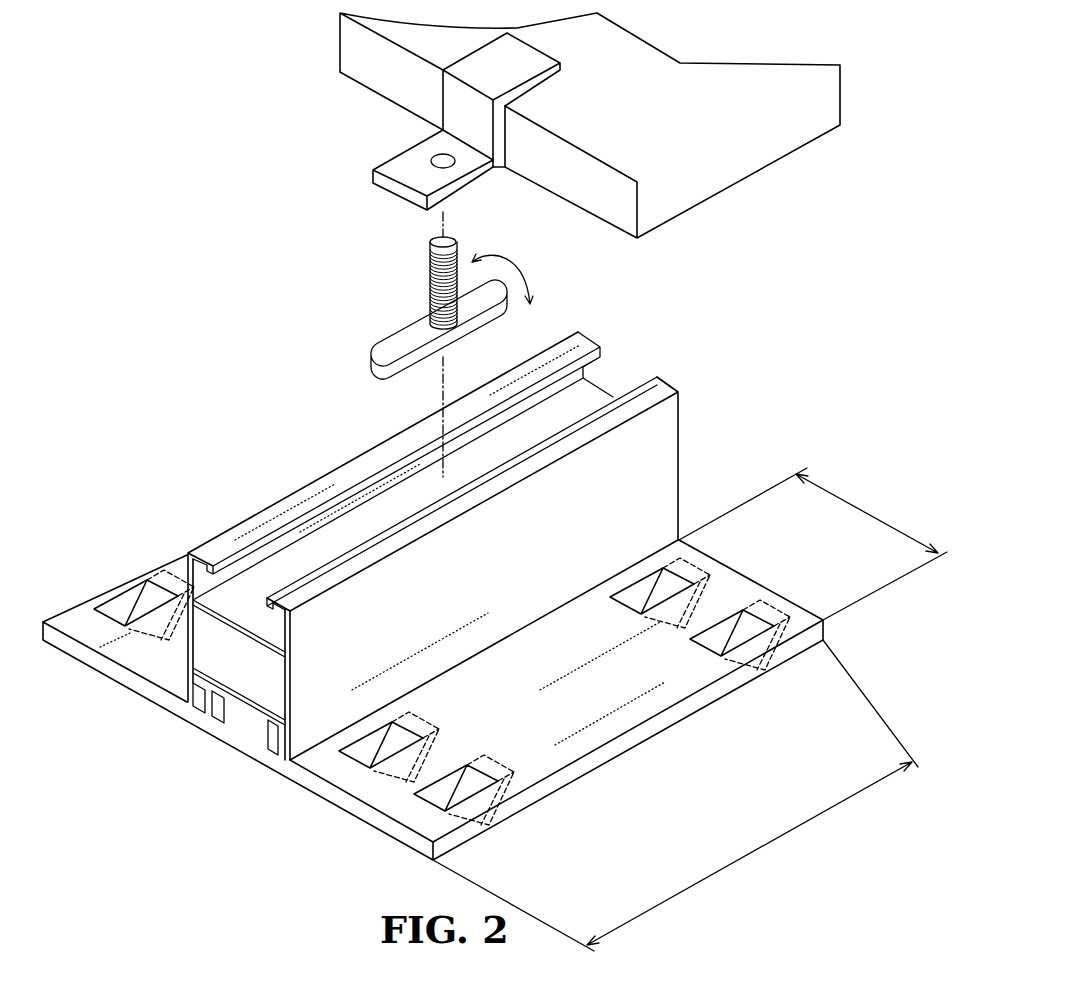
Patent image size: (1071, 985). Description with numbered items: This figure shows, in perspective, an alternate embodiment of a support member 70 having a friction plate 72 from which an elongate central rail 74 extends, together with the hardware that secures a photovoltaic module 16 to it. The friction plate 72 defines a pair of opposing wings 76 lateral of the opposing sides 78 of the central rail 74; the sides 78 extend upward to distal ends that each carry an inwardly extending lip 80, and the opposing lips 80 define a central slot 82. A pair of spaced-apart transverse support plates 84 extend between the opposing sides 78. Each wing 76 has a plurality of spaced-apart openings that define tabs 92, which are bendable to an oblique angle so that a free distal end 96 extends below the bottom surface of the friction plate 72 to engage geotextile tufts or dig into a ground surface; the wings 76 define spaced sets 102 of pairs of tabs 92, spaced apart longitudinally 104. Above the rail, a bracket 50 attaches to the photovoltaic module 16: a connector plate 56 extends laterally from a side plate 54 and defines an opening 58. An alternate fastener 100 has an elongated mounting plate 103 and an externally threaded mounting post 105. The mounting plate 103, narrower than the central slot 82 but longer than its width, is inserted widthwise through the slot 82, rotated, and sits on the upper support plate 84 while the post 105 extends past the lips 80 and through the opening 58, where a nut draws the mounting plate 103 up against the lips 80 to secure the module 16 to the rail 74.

The photovoltaic module 16 is at (660, 119).
The bracket 50 is at (415, 130).
The side plate 54 is at (458, 107).
The connector plate 56 is at (395, 172).
The opening 58 is at (429, 155).
The fastener 100 is at (406, 340).
The mounting plate 103 is at (385, 338).
The mounting post 105 is at (460, 259).
The support member 70 is at (448, 618).
The friction plate 72 is at (270, 762).
The central rail 74 is at (643, 470).
The wings 76 is at (145, 713).
The sides 78 is at (429, 550).
The lip 80 is at (317, 490).
The central slot 82 is at (410, 493).
The transverse support plates 84 is at (598, 397).
The tabs 92 is at (148, 600).
The free distal end 96 is at (735, 667).
The sets of pairs of tabs 102 is at (858, 508).
The longitudinal spacing 104 is at (760, 847).